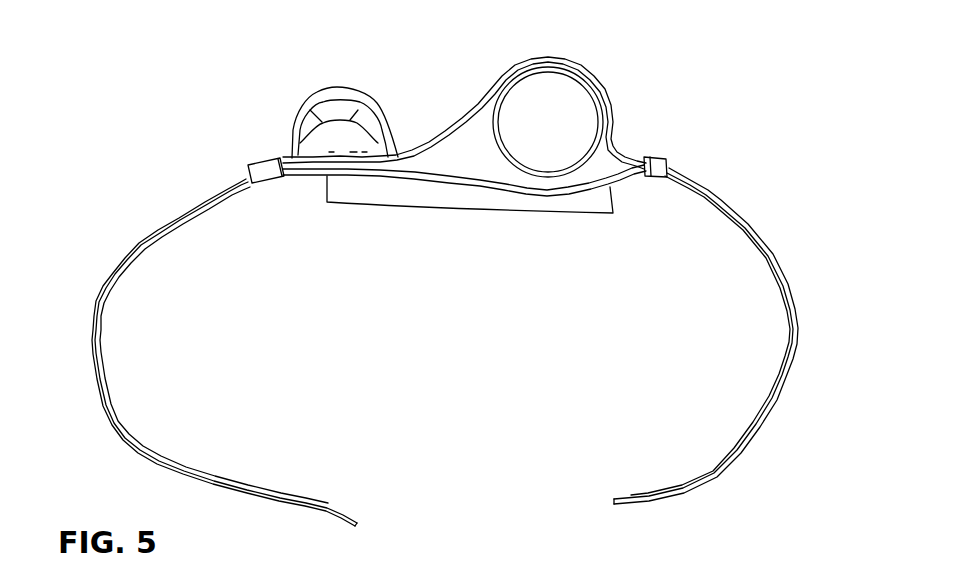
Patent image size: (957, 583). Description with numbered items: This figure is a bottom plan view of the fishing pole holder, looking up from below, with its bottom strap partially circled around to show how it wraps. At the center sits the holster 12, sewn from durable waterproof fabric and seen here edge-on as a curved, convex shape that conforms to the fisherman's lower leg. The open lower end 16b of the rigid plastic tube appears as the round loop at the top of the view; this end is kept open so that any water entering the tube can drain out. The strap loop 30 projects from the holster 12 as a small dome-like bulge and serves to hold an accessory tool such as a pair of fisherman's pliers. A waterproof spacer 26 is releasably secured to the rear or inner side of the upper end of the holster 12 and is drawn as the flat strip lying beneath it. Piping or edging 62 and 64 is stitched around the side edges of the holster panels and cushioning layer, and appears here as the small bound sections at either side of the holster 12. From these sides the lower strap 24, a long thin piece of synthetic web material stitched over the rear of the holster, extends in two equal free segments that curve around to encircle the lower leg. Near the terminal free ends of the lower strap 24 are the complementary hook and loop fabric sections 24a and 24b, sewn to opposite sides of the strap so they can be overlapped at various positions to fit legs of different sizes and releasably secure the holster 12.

The holster 12 is at (620, 87).
The lower end of the tube 16b is at (493, 141).
The lower strap 24 is at (446, 345).
The hook and loop fabric section 24a is at (115, 407).
The hook and loop fabric section 24b is at (754, 447).
The waterproof spacer 26 is at (469, 213).
The strap loop 30 is at (328, 87).
The piping 62 is at (668, 162).
The edging 64 is at (247, 174).